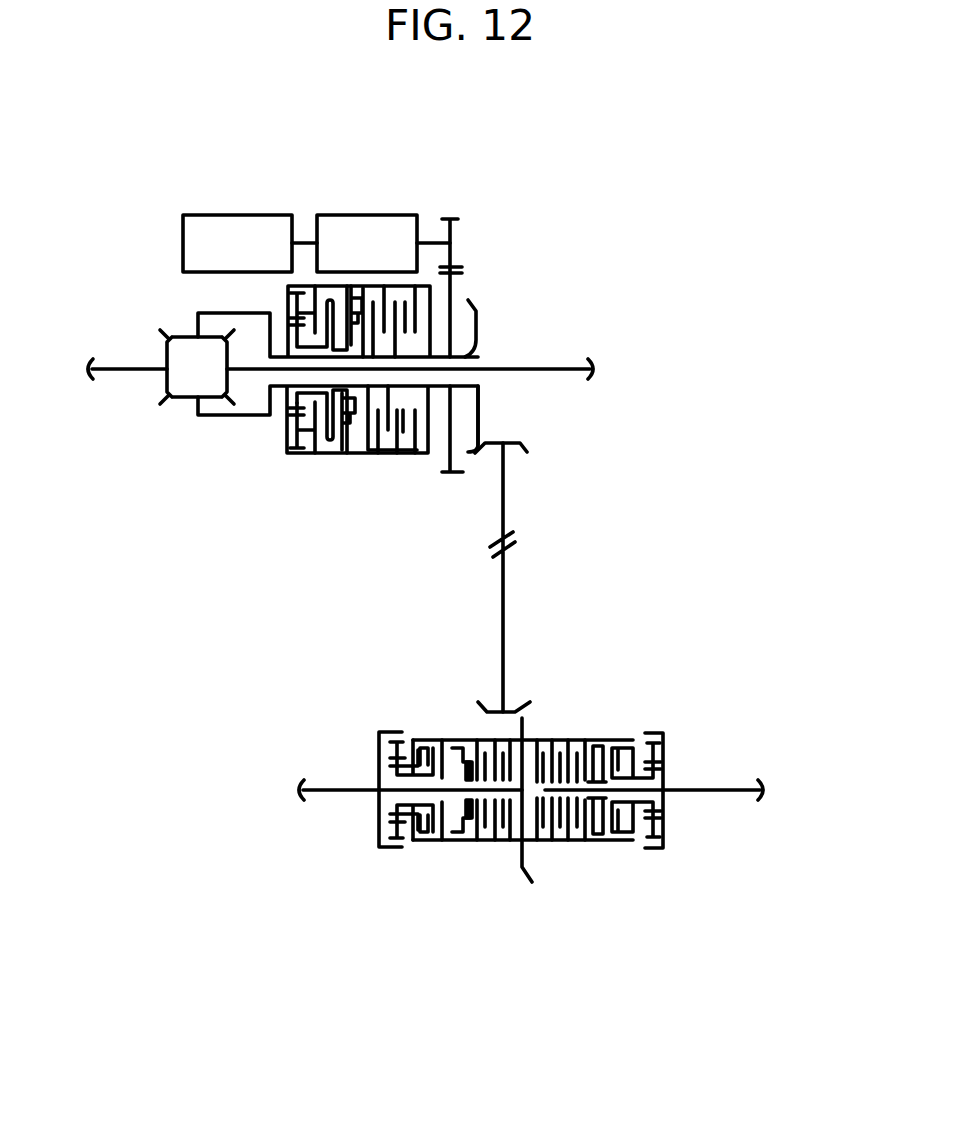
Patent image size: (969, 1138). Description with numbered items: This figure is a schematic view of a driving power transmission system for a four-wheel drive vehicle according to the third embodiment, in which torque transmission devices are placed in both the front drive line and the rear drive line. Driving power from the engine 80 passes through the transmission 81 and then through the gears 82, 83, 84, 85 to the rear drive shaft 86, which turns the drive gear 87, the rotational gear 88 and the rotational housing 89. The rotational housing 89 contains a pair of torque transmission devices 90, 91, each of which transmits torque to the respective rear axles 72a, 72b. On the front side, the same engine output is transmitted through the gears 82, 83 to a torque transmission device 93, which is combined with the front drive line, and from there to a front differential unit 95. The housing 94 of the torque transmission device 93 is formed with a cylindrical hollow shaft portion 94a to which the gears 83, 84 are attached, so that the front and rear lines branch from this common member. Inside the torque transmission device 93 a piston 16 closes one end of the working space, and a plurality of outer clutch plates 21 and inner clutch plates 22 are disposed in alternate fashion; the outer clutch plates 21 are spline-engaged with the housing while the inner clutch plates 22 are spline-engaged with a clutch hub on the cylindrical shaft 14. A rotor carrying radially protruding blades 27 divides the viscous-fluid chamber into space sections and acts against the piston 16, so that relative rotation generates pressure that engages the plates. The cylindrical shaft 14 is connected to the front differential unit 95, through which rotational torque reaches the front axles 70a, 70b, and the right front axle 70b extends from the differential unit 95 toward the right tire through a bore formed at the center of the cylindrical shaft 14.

The engine 80 is at (203, 216).
The transmission 81 is at (395, 216).
The gear 82 is at (455, 225).
The gear 83 is at (455, 290).
The drive gear 87 is at (287, 291).
The front differential unit 95 is at (165, 353).
The front axle 70a is at (120, 375).
The right front axle 70b is at (575, 362).
The cylindrical shaft 14 is at (283, 386).
The blades 27 is at (320, 452).
The piston 16 is at (347, 452).
The torque transmission device 93 is at (365, 457).
The housing 94 is at (387, 452).
The inner clutch plates 22 is at (400, 452).
The outer clutch plates 21 is at (418, 443).
The cylindrical hollow shaft portion 94a is at (465, 355).
The gear 84 is at (480, 413).
The gear 85 is at (525, 435).
The rear drive shaft 86 is at (503, 510).
The rotational housing 89 is at (480, 738).
The rotational gear 88 is at (522, 736).
The rear axle 72a is at (322, 790).
The rear axle 72b is at (712, 790).
The torque transmission device 90 is at (440, 849).
The torque transmission device 91 is at (568, 850).